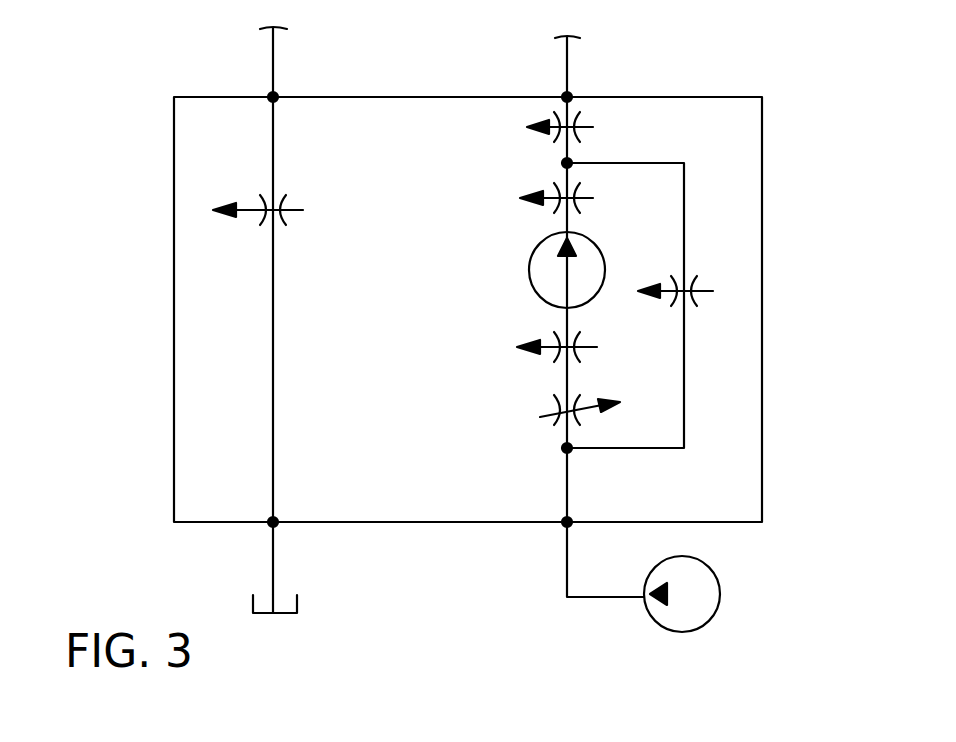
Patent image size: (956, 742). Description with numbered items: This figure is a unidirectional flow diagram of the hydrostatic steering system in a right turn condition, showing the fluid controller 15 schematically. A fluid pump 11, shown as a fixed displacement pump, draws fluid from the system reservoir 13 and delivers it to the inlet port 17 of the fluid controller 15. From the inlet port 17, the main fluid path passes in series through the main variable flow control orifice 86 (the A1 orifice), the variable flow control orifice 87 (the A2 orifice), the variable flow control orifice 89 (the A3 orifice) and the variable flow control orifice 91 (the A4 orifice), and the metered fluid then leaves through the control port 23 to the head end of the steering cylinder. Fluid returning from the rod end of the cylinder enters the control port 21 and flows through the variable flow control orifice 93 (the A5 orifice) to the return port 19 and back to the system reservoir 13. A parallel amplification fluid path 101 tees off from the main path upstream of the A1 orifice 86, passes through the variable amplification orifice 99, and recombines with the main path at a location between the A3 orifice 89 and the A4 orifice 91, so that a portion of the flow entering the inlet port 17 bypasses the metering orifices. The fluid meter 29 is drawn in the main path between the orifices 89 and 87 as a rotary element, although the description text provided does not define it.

The fluid pump 11 is at (720, 594).
The system reservoir 13 is at (299, 605).
The fluid controller 15 is at (775, 138).
The inlet port 17 is at (566, 527).
The return port 19 is at (271, 528).
The control fluid port 21 is at (271, 94).
The control fluid port 23 is at (569, 95).
The hydraulic motor 29 is at (531, 278).
The main variable flow control orifice 86 is at (551, 409).
The variable flow control orifice 87 is at (597, 342).
The variable flow control orifice 89 is at (592, 200).
The variable flow control orifice 91 is at (593, 125).
The variable flow control orifice 93 is at (293, 212).
The variable amplification orifice 99 is at (696, 290).
The amplification fluid path 101 is at (686, 393).